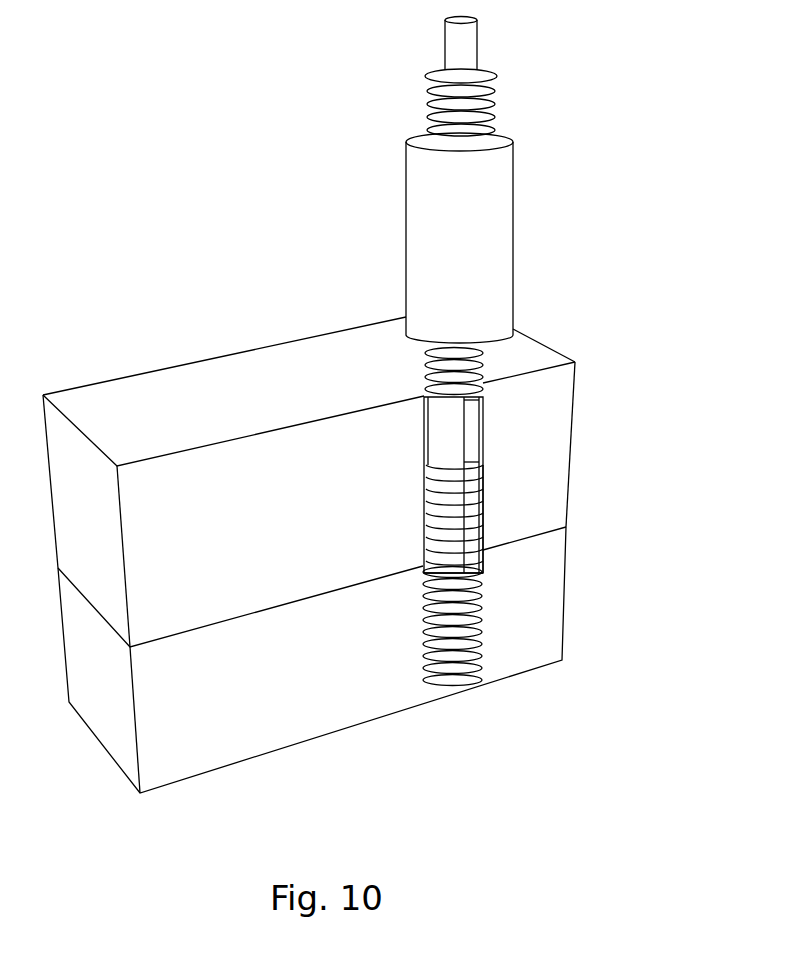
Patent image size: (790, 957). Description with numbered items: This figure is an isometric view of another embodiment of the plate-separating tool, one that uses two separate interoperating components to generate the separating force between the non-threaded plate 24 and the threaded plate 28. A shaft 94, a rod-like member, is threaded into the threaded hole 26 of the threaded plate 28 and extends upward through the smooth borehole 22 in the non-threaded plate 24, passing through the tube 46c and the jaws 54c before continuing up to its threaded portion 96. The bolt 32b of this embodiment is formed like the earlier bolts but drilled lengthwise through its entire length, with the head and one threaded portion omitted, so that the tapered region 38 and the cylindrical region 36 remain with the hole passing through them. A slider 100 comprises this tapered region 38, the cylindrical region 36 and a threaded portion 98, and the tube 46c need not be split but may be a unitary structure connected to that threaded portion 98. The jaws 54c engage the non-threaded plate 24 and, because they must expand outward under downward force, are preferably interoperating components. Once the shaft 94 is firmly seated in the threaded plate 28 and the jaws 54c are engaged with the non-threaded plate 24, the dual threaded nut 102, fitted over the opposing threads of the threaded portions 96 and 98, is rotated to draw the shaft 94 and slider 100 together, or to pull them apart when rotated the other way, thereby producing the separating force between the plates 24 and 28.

The shaft 94 is at (477, 45).
The threaded portion 96 is at (495, 112).
The dual threaded nut 102 is at (406, 232).
The threaded portion 98 is at (484, 368).
The smooth borehole 22 is at (423, 432).
The cylindrical region 36 is at (482, 418).
The tube 46c is at (479, 442).
The jaws 54c is at (485, 518).
The slider 100 is at (466, 528).
The tapered region 38 is at (425, 558).
The threaded hole 26 is at (483, 594).
The bolt 32b is at (481, 634).
The non-threaded plate 24 is at (576, 450).
The threaded plate 28 is at (567, 578).